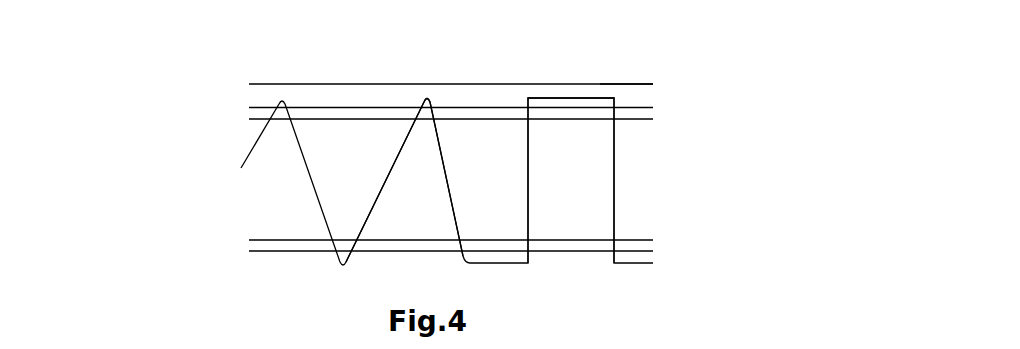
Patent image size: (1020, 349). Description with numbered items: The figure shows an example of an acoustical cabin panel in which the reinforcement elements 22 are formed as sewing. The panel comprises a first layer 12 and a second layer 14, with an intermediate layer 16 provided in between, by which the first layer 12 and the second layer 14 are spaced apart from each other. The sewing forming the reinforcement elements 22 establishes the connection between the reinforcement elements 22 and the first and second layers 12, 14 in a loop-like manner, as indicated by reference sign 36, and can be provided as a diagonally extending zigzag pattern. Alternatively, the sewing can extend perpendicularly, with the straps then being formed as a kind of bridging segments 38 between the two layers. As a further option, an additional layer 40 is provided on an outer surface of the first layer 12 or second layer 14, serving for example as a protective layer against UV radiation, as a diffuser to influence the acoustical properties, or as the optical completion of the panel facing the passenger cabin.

The first layer 12 is at (655, 110).
The second layer 14 is at (655, 245).
The intermediate layer 16 is at (645, 170).
The reinforcement elements 22 is at (247, 148).
The loop-like connection 36 is at (427, 96).
The bridging segments 38 is at (573, 93).
The additional layer 40 is at (637, 89).